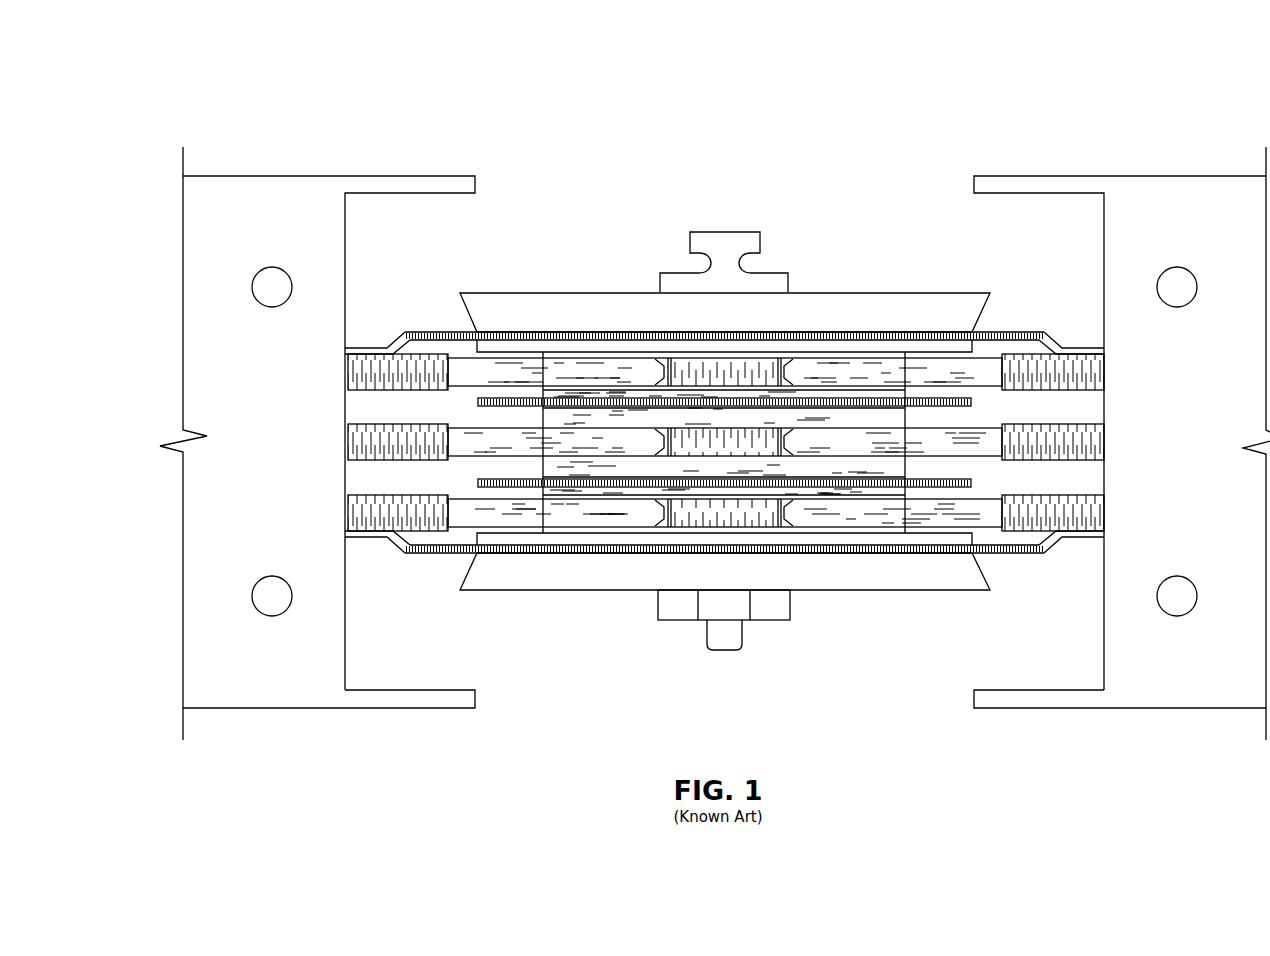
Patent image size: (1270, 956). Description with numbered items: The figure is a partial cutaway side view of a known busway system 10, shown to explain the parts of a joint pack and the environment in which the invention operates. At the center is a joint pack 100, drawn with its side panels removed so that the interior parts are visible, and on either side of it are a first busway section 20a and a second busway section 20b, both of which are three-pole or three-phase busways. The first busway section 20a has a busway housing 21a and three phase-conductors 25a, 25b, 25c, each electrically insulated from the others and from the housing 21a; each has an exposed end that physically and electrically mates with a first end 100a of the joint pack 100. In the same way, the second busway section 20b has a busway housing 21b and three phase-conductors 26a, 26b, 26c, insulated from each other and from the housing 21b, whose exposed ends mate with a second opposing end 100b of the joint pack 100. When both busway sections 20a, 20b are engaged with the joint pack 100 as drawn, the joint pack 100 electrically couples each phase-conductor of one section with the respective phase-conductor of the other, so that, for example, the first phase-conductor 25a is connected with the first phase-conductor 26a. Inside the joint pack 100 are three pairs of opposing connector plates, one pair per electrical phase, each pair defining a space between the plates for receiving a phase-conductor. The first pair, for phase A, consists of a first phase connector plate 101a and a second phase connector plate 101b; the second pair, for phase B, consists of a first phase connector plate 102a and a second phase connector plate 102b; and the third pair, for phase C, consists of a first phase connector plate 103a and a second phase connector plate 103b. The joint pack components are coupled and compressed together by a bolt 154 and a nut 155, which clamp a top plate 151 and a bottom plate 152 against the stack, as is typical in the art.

The busway system 10 is at (218, 62).
The first busway section 20a is at (317, 423).
The second busway section 20b is at (1122, 423).
The busway housing 21a is at (263, 697).
The busway housing 21b is at (1170, 697).
The first phase-conductor 25a is at (480, 373).
The phase-conductor 25b is at (462, 442).
The phase-conductor 25c is at (458, 515).
The first phase-conductor 26a is at (974, 372).
The phase-conductor 26b is at (987, 442).
The phase-conductor 26c is at (990, 515).
The joint pack 100 is at (755, 182).
The first end 100a is at (447, 273).
The second opposing end 100b is at (1004, 273).
The first phase connector plate 101a is at (563, 355).
The second phase connector plate 101b is at (598, 385).
The first phase connector plate 102a is at (567, 420).
The second phase connector plate 102b is at (570, 462).
The first phase connector plate 103a is at (565, 492).
The second phase connector plate 103b is at (550, 528).
The top plate 151 is at (495, 303).
The bottom plate 152 is at (972, 577).
The bolt 154 is at (718, 638).
The nut 155 is at (672, 610).